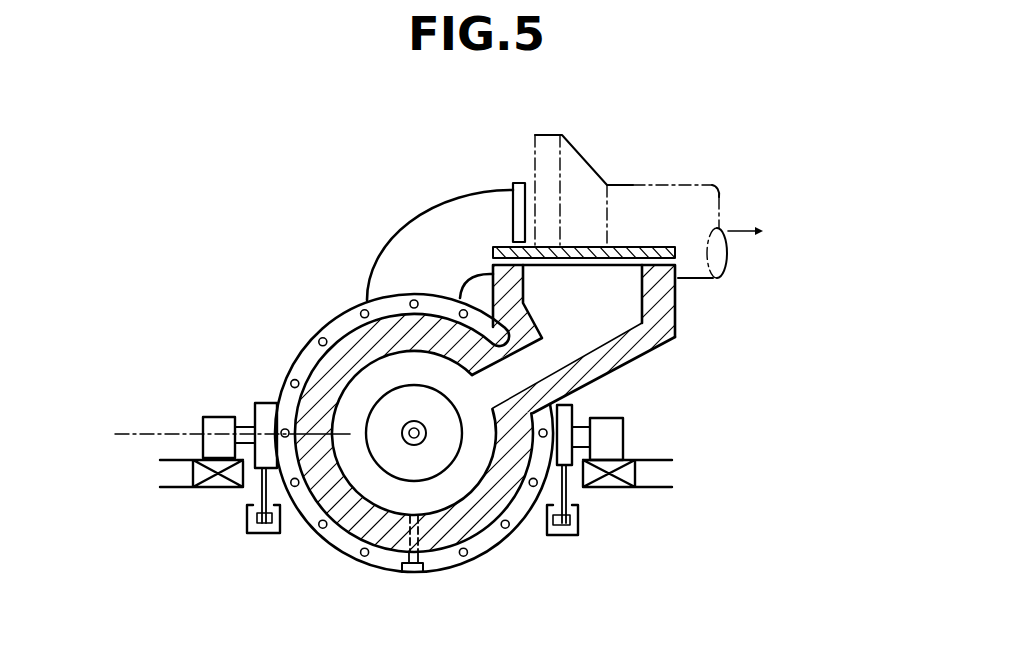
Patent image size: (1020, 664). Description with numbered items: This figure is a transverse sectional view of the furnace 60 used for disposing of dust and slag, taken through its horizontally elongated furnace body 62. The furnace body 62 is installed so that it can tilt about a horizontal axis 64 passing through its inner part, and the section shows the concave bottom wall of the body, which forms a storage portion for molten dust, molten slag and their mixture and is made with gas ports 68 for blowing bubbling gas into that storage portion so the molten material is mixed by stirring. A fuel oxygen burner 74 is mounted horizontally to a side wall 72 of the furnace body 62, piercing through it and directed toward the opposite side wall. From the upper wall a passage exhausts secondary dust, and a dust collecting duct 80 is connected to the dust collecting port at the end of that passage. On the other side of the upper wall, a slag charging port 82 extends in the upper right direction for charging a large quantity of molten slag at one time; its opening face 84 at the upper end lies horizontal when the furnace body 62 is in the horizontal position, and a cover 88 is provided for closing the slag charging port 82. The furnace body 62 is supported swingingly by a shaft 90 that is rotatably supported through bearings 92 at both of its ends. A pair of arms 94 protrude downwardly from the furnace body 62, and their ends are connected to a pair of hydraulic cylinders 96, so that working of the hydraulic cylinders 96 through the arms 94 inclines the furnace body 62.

The furnace 60 is at (242, 274).
The furnace body 62 is at (329, 308).
The horizontal axis 64 is at (145, 432).
The gas ports 68 is at (415, 573).
The side wall 72 is at (440, 460).
The fuel oxygen burner 74 is at (407, 445).
The dust collecting duct 80 is at (445, 213).
The slag charging port 82 is at (637, 350).
The opening face 84 is at (628, 287).
The cover 88 is at (612, 248).
The shaft 90 is at (247, 430).
The bearings 92 is at (217, 422).
The arms 94 is at (262, 482).
The hydraulic cylinders 96 is at (267, 535).